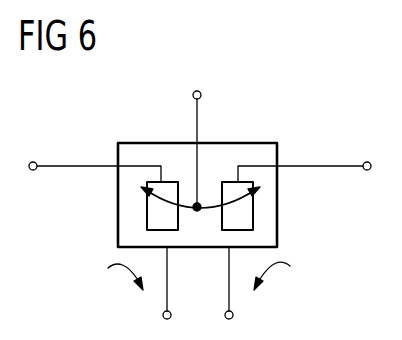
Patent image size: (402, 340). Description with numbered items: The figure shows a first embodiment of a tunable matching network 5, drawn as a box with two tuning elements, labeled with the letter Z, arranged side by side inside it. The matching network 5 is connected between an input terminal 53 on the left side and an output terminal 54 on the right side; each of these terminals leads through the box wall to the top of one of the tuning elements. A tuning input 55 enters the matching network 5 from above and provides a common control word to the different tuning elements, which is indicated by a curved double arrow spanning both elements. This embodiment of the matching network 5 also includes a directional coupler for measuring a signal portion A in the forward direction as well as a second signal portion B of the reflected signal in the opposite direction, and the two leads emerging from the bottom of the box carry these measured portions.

The tunable matching network 5 is at (277, 217).
The input terminal 53 is at (34, 170).
The output terminal 54 is at (366, 162).
The tuning input 55 is at (201, 95).